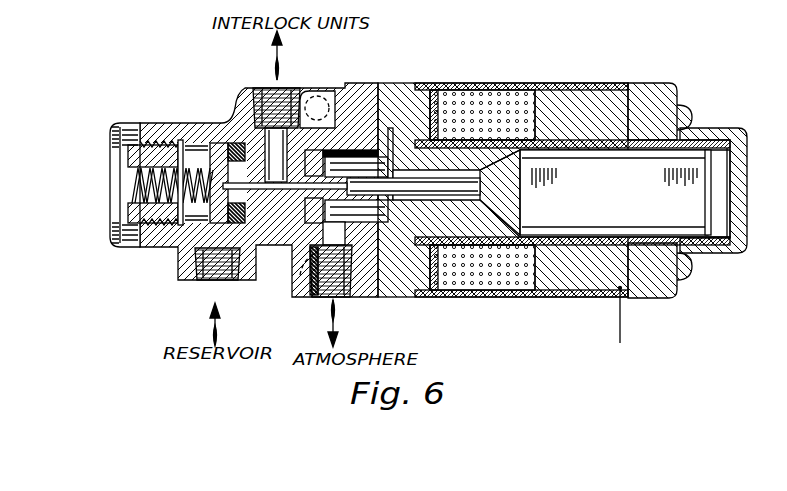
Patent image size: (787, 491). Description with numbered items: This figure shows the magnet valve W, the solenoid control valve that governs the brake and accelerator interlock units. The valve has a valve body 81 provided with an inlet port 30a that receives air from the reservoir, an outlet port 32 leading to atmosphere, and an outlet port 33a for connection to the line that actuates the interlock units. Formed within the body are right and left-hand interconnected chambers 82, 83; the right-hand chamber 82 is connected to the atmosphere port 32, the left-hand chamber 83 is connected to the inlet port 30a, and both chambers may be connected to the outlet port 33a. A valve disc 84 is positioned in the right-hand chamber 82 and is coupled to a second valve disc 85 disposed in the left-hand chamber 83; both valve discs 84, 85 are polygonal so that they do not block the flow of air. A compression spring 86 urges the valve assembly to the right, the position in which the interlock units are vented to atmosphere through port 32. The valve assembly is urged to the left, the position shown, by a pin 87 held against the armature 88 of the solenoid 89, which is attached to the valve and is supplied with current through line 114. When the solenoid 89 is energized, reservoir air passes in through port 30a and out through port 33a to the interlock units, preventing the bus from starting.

The valve body 81 is at (172, 118).
The right-hand chamber 82 is at (341, 150).
The left-hand chamber 83 is at (220, 150).
The valve disc 84 is at (283, 245).
The second valve disc 85 is at (208, 214).
The compression spring 86 is at (138, 194).
The pin 87 is at (351, 186).
The armature 88 is at (693, 222).
The solenoid 89 is at (571, 272).
The line 114 is at (622, 313).
The inlet port 30a is at (205, 282).
The outlet port 32 is at (350, 297).
The outlet port 33a is at (260, 88).
The magnet valve W is at (406, 80).